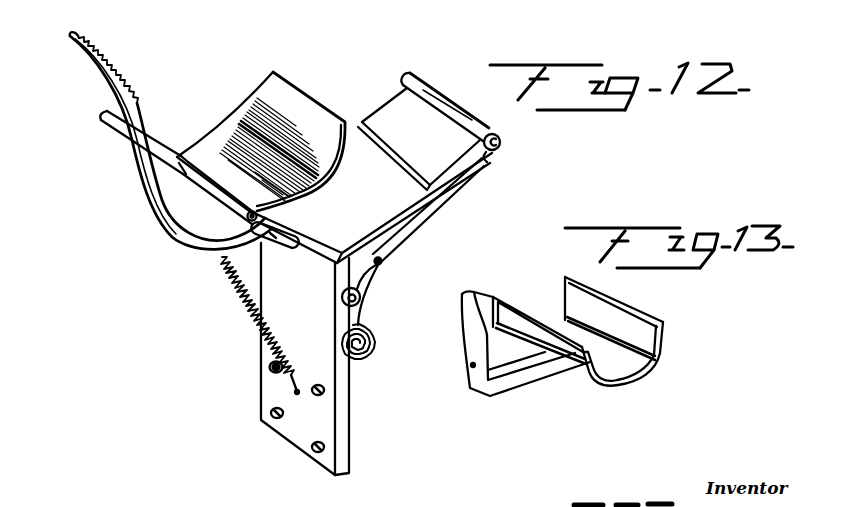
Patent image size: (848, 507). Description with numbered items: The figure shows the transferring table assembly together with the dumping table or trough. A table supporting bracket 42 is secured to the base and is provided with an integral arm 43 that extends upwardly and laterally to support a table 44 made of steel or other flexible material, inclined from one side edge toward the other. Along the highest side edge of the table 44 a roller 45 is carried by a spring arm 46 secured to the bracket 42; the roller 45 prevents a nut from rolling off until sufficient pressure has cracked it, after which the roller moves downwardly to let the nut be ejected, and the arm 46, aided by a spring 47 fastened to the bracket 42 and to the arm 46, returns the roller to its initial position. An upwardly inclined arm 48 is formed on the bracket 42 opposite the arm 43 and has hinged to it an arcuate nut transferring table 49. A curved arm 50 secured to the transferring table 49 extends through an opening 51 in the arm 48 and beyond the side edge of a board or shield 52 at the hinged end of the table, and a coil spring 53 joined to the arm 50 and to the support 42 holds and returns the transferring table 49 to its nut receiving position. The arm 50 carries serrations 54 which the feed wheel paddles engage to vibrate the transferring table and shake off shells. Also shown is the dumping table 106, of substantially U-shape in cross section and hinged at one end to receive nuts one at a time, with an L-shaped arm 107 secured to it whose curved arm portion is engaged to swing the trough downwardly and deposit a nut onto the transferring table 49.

In FIG. 12, the table supporting bracket 42 is at (372, 428).
In FIG. 12, the arm 43 is at (381, 219).
In FIG. 12, the table 44 is at (387, 105).
In FIG. 12, the roller 45 is at (441, 100).
In FIG. 12, the spring arm 46 is at (408, 242).
In FIG. 12, the spring 47 is at (388, 348).
In FIG. 12, the upwardly inclined arm 48 is at (276, 237).
In FIG. 12, the transferring table 49 is at (297, 107).
In FIG. 12, the curved arm 50 is at (191, 250).
In FIG. 12, the opening 51 is at (292, 250).
In FIG. 12, the board or shield 52 is at (157, 143).
In FIG. 12, the coil spring 53 is at (257, 327).
In FIG. 12, the serrations 54 is at (126, 56).
In FIG. 13, the dumping table 106 is at (663, 342).
In FIG. 13, the L-shaped arm 107 is at (510, 385).